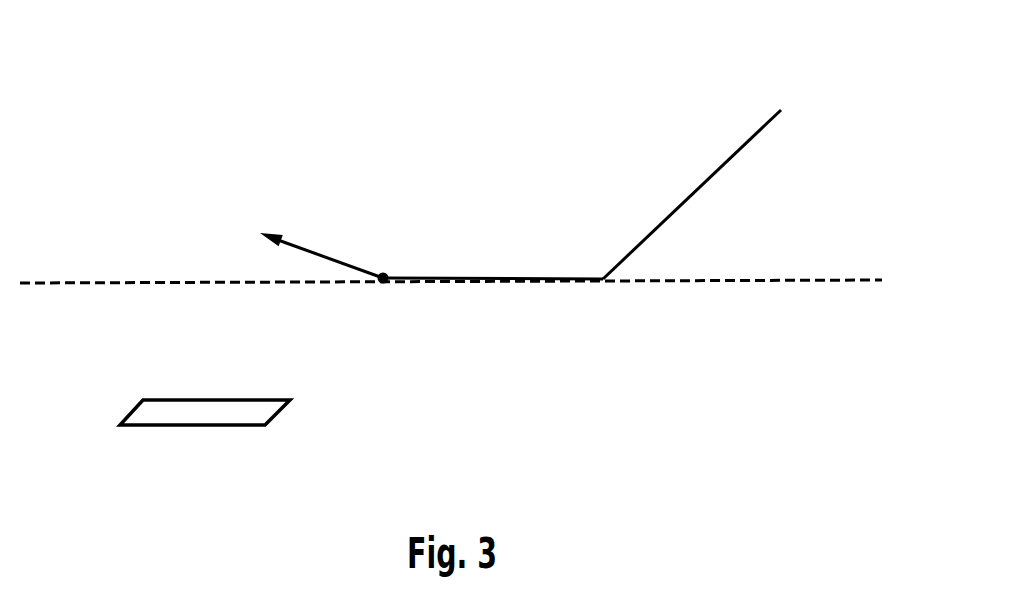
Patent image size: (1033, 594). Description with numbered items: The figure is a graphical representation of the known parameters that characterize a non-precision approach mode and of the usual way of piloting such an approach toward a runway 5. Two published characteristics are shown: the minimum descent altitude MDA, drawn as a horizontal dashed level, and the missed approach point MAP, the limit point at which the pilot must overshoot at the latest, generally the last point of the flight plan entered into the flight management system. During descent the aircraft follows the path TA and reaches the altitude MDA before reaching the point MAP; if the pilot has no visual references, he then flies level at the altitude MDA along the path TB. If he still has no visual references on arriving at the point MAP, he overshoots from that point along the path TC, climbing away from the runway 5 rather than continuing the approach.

The minimum descent altitude MDA is at (752, 282).
The path TB is at (497, 257).
The path TA is at (700, 158).
The path TC is at (321, 235).
The missed approach point MAP is at (383, 283).
The runway 5 is at (200, 418).